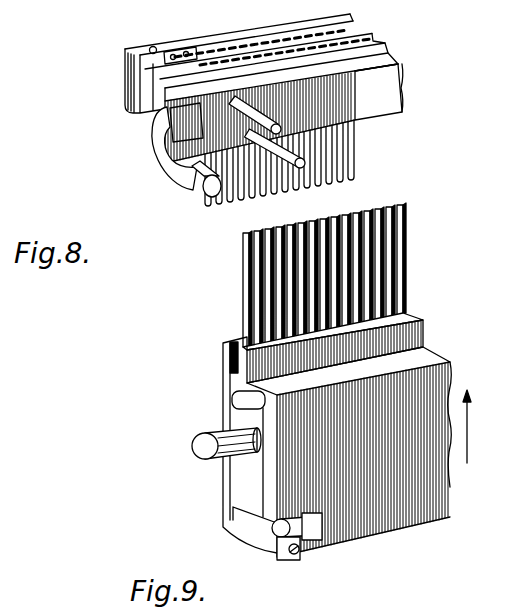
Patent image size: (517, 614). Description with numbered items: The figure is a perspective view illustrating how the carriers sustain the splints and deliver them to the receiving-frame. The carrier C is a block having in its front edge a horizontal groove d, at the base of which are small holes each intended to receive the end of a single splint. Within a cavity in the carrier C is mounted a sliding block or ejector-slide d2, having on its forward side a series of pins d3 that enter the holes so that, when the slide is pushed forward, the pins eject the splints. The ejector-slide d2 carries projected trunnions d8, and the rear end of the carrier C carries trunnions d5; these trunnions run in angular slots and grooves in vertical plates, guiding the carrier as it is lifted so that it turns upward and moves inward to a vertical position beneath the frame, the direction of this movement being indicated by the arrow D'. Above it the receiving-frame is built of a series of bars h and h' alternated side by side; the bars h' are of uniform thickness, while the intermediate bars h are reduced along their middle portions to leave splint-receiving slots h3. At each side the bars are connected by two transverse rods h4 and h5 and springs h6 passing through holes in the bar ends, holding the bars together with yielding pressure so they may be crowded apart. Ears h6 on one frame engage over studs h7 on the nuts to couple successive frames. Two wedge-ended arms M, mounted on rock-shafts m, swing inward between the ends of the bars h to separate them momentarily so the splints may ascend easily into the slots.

In FIG. 8, the frame bar h is at (264, 85).
In FIG. 8, the frame bar h' is at (296, 39).
In FIG. 8, the splint-receiving slot h3 is at (395, 68).
In FIG. 8, the transverse rod h4 is at (233, 76).
In FIG. 8, the transverse rod h5 is at (288, 168).
In FIG. 8, the spring h6 is at (166, 52).
In FIG. 8, the stud h7 is at (156, 46).
In FIG. 8, the carrier C is at (289, 163).
In FIG. 9, the carrier C is at (333, 275).
In FIG. 8, the arm M is at (160, 152).
In FIG. 8, the rock-shaft m is at (199, 190).
In FIG. 9, the horizontal groove d is at (238, 340).
In FIG. 9, the ejector-slide d2 is at (253, 462).
In FIG. 9, the pin d3 is at (247, 403).
In FIG. 9, the trunnion d8 is at (205, 453).
In FIG. 9, the trunnion d5 is at (281, 537).
In FIG. 9, the direction of movement D' is at (474, 409).